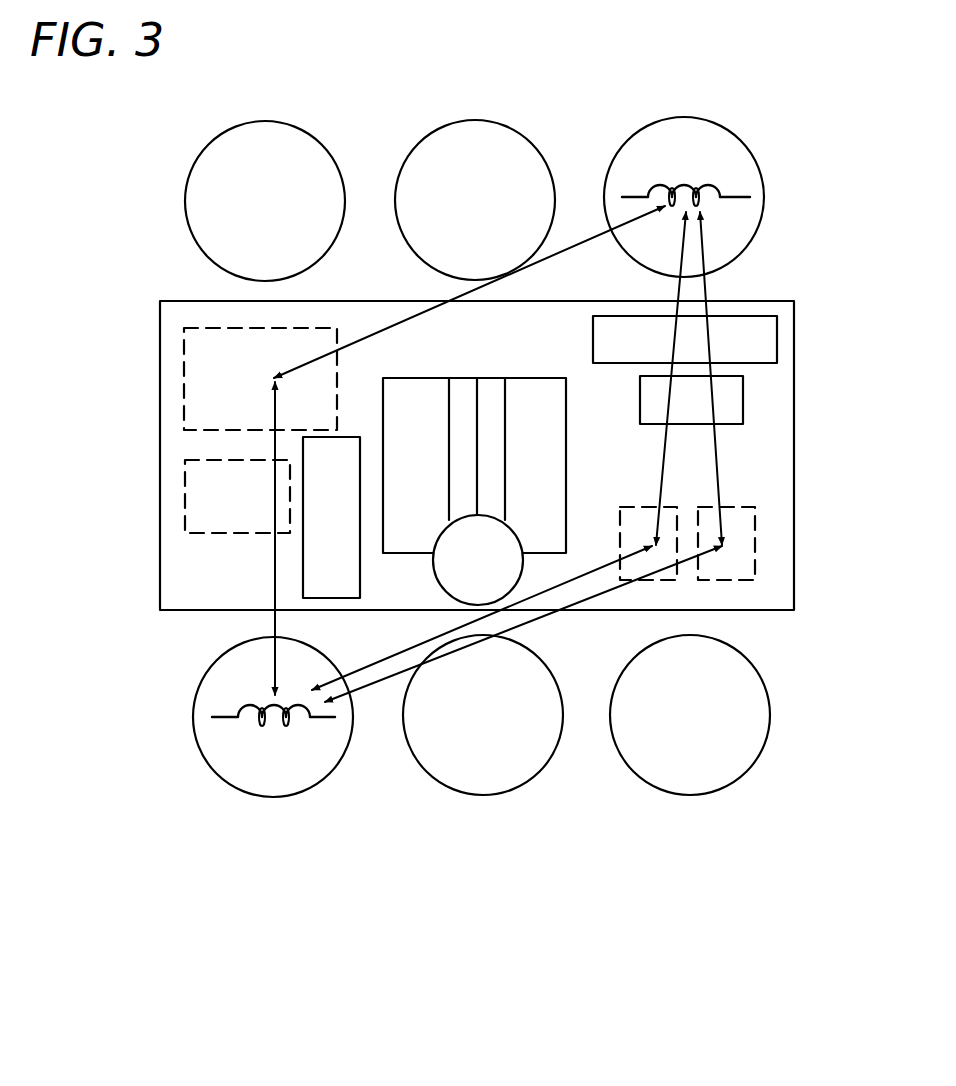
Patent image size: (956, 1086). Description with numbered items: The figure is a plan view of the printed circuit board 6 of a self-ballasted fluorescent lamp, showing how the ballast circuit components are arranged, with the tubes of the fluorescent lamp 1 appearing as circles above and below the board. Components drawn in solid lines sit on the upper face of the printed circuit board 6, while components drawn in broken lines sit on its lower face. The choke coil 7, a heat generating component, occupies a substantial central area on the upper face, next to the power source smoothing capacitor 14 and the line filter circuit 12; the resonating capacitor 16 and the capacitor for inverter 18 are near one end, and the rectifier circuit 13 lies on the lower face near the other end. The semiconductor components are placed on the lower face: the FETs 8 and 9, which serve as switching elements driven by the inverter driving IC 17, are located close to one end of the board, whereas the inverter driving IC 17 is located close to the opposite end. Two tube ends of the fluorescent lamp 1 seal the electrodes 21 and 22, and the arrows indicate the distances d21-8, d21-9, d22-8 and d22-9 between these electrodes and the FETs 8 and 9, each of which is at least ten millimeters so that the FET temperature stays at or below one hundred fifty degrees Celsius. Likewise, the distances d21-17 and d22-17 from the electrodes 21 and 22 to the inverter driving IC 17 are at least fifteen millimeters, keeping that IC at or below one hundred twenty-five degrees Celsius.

The fluorescent lamp 1 is at (258, 155).
The printed circuit board 6 is at (178, 445).
The choke coil 7 is at (548, 378).
The FET 8 is at (675, 582).
The FET 9 is at (757, 568).
The line filter circuit 12 is at (303, 572).
The rectifier circuit 13 is at (183, 527).
The power source smoothing capacitor 14 is at (515, 592).
The resonating capacitor 16 is at (777, 325).
The inverter driving IC 17 is at (184, 355).
The capacitor for inverter 18 is at (743, 397).
The electrode 21 is at (712, 188).
The electrode 22 is at (258, 722).
The distance between electrode 21 and inverter driving IC 17 d21-17 is at (405, 318).
The distance between electrode 22 and inverter driving IC 17 d22-17 is at (268, 628).
The distance between electrode 21 and FET 8 d21-8 is at (677, 477).
The distance between electrode 21 and FET 9 d21-9 is at (719, 441).
The distance between electrode 22 and FET 8 d22-8 is at (383, 680).
The distance between electrode 22 and FET 9 d22-9 is at (385, 680).